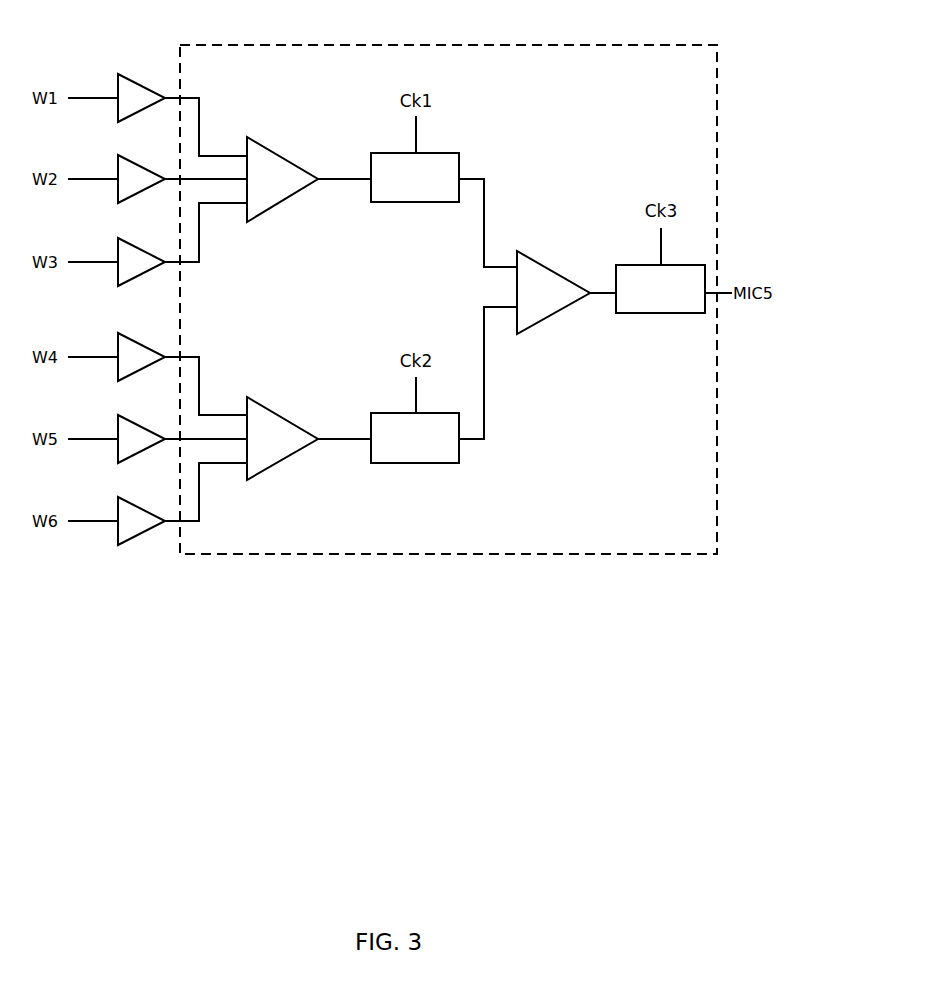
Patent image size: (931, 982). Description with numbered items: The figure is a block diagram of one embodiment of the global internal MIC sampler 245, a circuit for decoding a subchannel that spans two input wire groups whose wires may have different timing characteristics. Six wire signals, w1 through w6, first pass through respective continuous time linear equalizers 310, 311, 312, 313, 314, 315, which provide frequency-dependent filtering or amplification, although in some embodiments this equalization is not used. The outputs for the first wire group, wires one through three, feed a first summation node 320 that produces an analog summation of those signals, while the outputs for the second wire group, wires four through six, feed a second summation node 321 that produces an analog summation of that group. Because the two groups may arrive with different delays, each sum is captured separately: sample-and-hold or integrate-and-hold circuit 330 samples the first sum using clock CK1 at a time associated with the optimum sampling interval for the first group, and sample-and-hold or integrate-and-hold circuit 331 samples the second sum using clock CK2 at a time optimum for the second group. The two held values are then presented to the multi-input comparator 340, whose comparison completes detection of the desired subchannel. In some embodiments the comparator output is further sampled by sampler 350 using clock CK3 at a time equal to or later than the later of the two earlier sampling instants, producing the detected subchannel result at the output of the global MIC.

The internal MIC sampler 245 is at (538, 45).
The continuous time linear equalizer 310 is at (137, 74).
The continuous time linear equalizer 311 is at (137, 155).
The continuous time linear equalizer 312 is at (137, 238).
The continuous time linear equalizer 313 is at (137, 333).
The continuous time linear equalizer 314 is at (137, 415).
The continuous time linear equalizer 315 is at (137, 497).
The summation node 320 is at (290, 162).
The summation node 321 is at (290, 422).
The sample-and-hold circuit 330 is at (387, 153).
The sample-and-hold circuit 331 is at (387, 413).
The multi-input comparator 340 is at (562, 277).
The sampler 350 is at (633, 265).